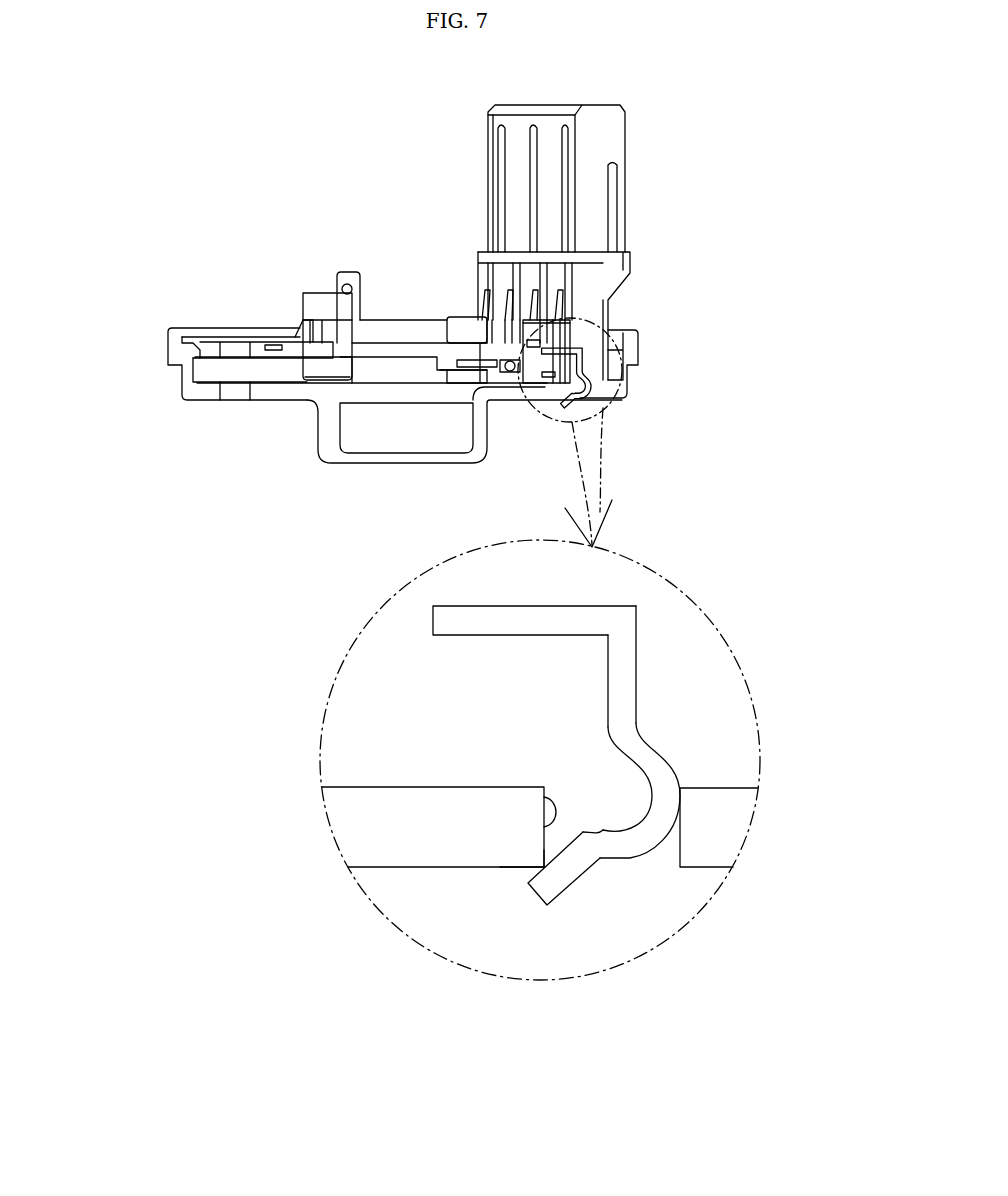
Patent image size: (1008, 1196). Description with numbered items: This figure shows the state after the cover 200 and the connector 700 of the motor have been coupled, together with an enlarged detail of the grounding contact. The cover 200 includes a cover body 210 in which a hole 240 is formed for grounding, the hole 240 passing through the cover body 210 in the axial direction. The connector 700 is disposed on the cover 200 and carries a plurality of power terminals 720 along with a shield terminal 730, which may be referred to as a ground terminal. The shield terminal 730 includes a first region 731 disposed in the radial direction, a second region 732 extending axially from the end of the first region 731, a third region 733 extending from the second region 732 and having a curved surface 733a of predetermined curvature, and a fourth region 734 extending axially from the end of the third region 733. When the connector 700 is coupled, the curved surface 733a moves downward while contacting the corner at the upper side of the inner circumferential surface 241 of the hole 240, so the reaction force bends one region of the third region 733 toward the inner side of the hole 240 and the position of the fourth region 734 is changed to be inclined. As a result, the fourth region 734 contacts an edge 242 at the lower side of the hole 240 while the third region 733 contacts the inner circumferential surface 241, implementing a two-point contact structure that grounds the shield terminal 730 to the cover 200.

The cover 200 is at (175, 388).
The cover body 210 is at (720, 822).
The hole 240 is at (572, 808).
The inner circumferential surface 241 is at (544, 790).
The edge 242 is at (544, 866).
The connector 700 is at (210, 323).
The power terminal 720 is at (348, 270).
The shield terminal 730 is at (588, 343).
The first region 731 is at (508, 620).
The second region 732 is at (628, 660).
The third region 733 is at (622, 845).
The curved surface 733a is at (643, 853).
The fourth region 734 is at (562, 873).